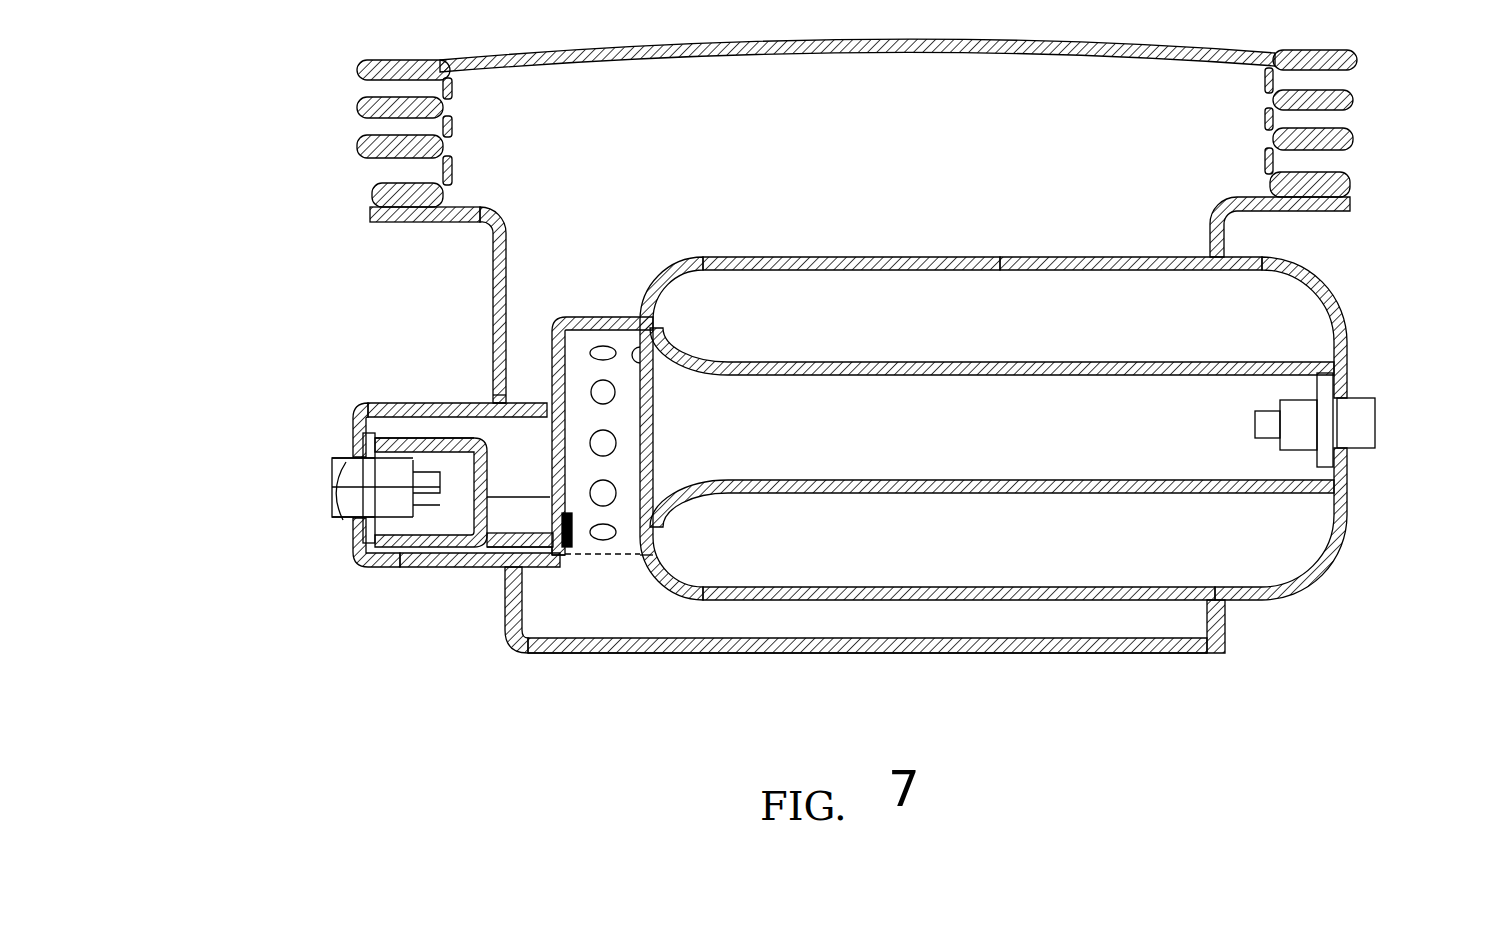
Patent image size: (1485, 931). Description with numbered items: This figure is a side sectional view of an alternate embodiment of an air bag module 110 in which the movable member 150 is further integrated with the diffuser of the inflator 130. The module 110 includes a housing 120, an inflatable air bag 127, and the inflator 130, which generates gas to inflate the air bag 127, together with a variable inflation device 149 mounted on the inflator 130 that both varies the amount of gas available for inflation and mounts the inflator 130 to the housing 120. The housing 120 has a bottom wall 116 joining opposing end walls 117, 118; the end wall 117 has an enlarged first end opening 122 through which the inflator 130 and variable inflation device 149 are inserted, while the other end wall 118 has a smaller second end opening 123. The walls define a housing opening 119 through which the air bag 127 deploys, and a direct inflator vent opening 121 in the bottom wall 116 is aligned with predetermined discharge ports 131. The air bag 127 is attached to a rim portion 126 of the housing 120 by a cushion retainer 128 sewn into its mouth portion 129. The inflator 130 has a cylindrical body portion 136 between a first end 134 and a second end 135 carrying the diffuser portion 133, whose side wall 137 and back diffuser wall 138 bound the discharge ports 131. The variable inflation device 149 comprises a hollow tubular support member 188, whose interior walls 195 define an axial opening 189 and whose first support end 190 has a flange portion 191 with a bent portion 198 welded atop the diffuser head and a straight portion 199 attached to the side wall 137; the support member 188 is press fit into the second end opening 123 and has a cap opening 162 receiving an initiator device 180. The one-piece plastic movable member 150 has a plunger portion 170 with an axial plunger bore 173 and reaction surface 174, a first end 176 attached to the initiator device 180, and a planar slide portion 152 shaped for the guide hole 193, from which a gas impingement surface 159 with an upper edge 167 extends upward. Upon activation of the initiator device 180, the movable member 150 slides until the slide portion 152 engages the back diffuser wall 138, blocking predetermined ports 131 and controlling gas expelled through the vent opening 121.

The module 110 is at (450, 800).
The bottom wall 116 is at (705, 653).
The end wall 117 is at (1225, 623).
The end wall 118 is at (532, 562).
The housing opening 119 is at (478, 208).
The housing 120 is at (1057, 657).
The direct inflator vent opening 121 is at (590, 653).
The first end opening 122 is at (1263, 245).
The second end opening 123 is at (550, 560).
The rim portion 126 is at (1347, 195).
The air bag 127 is at (889, 50).
The cushion retainer 128 is at (372, 188).
The mouth portion 129 is at (363, 137).
The inflator 130 is at (1333, 578).
The discharge ports 131 is at (617, 388).
The diffuser portion 133 is at (628, 313).
The first end 134 is at (1333, 300).
The second end 135 is at (762, 262).
The body portion 136 is at (1010, 258).
The side wall 137 is at (653, 557).
The back diffuser wall 138 is at (660, 358).
The variable inflation device 149 is at (320, 658).
The movable member 150 is at (390, 447).
The slide portion 152 is at (497, 562).
The gas impingement surface 159 is at (580, 560).
The cap opening 162 is at (355, 510).
The upper edge 167 is at (573, 527).
The plunger portion 170 is at (348, 410).
The axial plunger bore 173 is at (365, 548).
The reaction surface 174 is at (360, 468).
The first end 176 is at (385, 567).
The initiator device 180 is at (328, 516).
The support member 188 is at (345, 420).
The axial opening 189 is at (440, 562).
The first support end 190 is at (542, 390).
The flange portion 191 is at (430, 317).
The guide hole 193 is at (546, 533).
The interior walls 195 is at (422, 430).
The bent portion 198 is at (543, 395).
The straight portion 199 is at (573, 560).